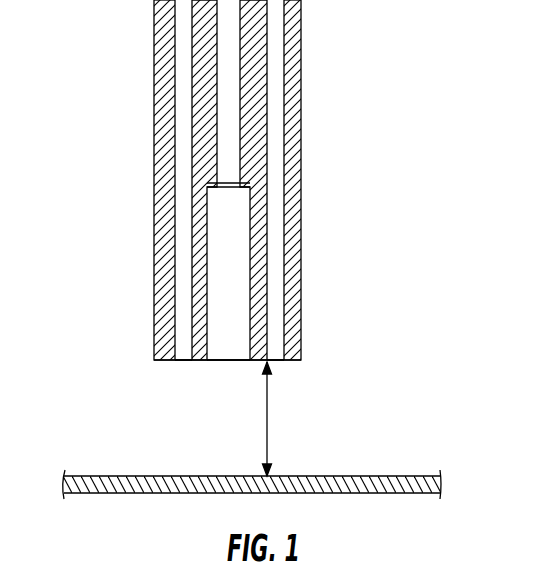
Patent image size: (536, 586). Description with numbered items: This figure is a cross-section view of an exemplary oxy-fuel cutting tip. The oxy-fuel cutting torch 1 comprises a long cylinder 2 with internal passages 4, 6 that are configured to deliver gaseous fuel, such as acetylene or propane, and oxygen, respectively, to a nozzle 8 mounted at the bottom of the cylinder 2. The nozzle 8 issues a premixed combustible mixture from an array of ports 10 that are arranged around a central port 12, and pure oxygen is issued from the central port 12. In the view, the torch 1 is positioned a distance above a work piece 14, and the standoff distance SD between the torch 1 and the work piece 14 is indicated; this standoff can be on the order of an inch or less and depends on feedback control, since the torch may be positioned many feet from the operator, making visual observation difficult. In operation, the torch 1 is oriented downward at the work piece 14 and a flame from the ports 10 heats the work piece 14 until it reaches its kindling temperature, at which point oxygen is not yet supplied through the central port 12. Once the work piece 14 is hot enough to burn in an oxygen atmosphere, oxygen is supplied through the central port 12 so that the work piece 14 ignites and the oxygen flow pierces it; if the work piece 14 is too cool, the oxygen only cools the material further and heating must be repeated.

The oxy-fuel cutting torch 1 is at (219, 215).
The long cylinder 2 is at (301, 122).
The internal passage 4 is at (183, 256).
The internal passage 6 is at (233, 286).
The nozzle 8 is at (302, 352).
The ports 10 is at (179, 362).
The central port 12 is at (224, 362).
The work piece 14 is at (418, 476).
The standoff distance SD is at (267, 418).